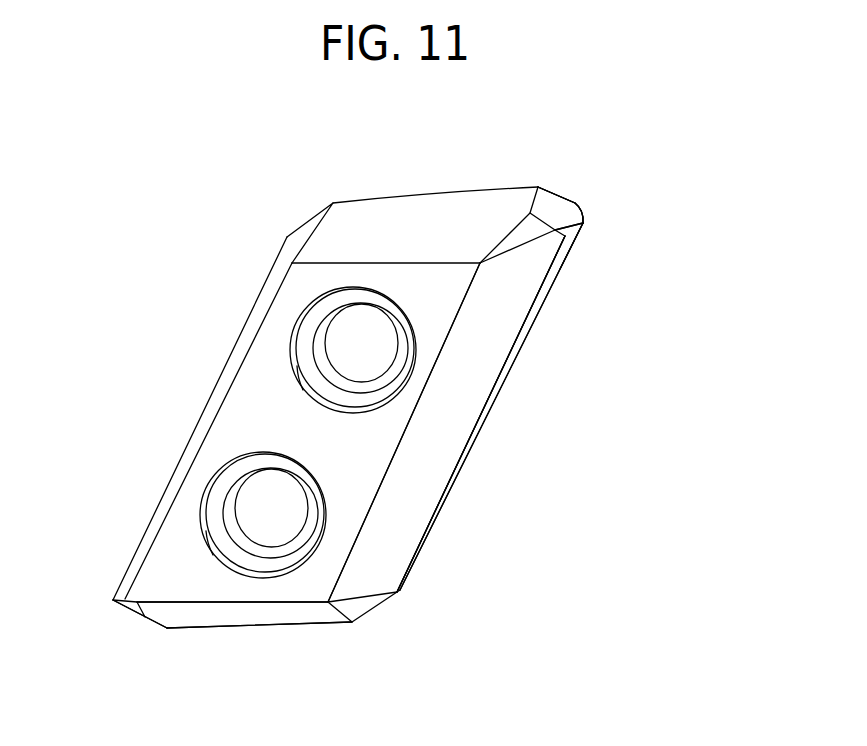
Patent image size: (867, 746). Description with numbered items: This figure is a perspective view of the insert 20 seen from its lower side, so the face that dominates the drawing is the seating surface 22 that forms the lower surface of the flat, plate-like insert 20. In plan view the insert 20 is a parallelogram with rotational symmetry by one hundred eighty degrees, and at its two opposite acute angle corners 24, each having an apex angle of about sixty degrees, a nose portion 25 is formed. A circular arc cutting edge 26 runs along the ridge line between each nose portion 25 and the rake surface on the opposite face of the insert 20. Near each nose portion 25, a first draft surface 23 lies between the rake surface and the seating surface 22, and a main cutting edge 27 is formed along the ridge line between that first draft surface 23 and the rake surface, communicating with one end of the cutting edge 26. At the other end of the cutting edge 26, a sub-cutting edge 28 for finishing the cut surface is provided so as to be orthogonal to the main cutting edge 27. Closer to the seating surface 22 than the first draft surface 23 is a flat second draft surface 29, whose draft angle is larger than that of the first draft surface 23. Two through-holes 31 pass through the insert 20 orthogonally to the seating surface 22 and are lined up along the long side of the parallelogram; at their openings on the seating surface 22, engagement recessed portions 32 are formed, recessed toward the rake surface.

The insert 20 is at (232, 212).
The seating surface 22 is at (207, 573).
The first draft surface 23 is at (510, 370).
The acute angle corner 24 is at (663, 137).
The nose portion 25 is at (617, 222).
The circular arc cutting edge 26 is at (588, 205).
The main cutting edge 27 is at (568, 260).
The sub-cutting edge 28 is at (563, 190).
The second draft surface 29 is at (422, 487).
The through-hole 31 is at (380, 357).
The engagement recessed portion 32 is at (292, 377).